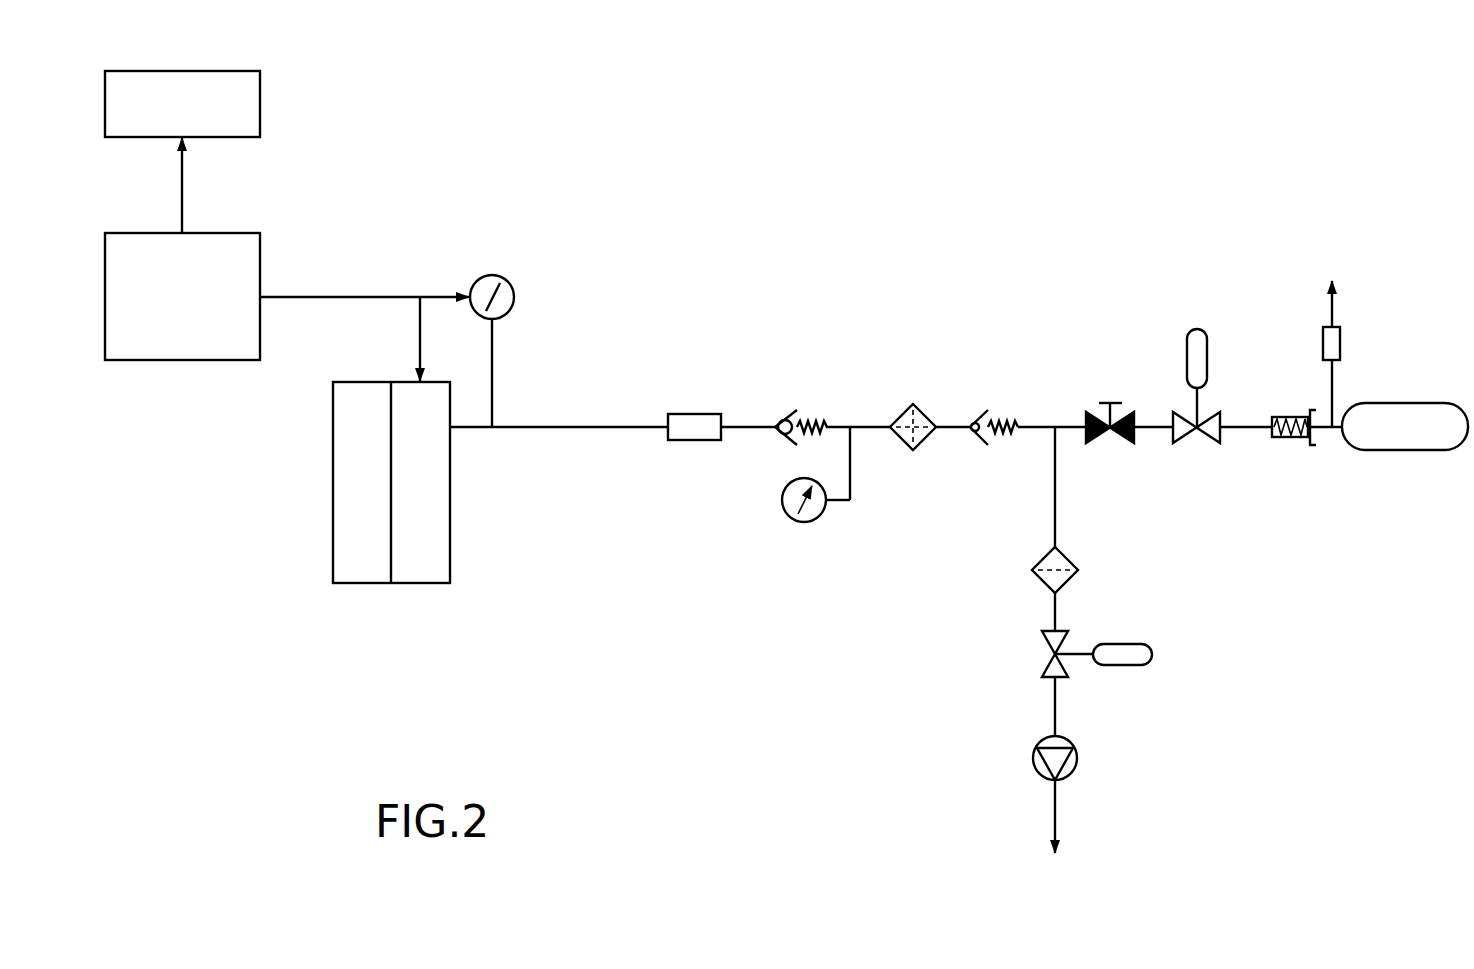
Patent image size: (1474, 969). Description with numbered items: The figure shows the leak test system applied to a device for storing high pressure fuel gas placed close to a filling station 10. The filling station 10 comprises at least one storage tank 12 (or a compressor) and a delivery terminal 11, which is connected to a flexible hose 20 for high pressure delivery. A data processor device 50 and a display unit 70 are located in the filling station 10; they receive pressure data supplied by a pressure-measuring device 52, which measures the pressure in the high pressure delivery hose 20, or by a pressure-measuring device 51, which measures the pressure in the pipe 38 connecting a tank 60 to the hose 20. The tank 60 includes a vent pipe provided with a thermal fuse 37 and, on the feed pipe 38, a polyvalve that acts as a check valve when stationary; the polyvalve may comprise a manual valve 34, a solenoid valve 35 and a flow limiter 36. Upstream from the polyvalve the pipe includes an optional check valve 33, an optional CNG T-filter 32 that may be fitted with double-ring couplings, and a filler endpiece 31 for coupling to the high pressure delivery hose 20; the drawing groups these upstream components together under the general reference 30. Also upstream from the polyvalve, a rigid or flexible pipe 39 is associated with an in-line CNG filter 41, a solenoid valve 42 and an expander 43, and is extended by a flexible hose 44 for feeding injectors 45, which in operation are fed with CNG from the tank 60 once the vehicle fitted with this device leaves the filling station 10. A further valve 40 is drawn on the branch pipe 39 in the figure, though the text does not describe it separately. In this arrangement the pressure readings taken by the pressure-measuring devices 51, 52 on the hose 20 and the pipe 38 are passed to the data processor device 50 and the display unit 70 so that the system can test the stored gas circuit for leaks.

The filling station 10 is at (391, 526).
The delivery terminal 11 is at (437, 464).
The storage tank 12 is at (375, 464).
The flexible hose 20 is at (596, 427).
The pressure regulating assembly 30 is at (786, 368).
The filler endpiece 31 is at (804, 418).
The CNG T-filter 32 is at (920, 442).
The check valve 33 is at (1000, 418).
The manual valve 34 is at (1128, 445).
The solenoid valve 35 is at (1195, 365).
The flow limiter 36 is at (1270, 437).
The thermal fuse 37 is at (1340, 342).
The feed pipe 38 is at (1332, 437).
The pipe 39 is at (1053, 513).
The valve 40 is at (1067, 654).
The in-line CNG filter 41 is at (1042, 580).
The solenoid valve 42 is at (1118, 655).
The expander 43 is at (1078, 764).
The flexible hose 44 is at (1053, 808).
The injectors 45 is at (1057, 878).
The data processor device 50 is at (198, 311).
The pressure-measuring device 51 is at (816, 508).
The pressure-measuring device 52 is at (514, 297).
The tank 60 is at (1417, 432).
The display unit 70 is at (198, 118).